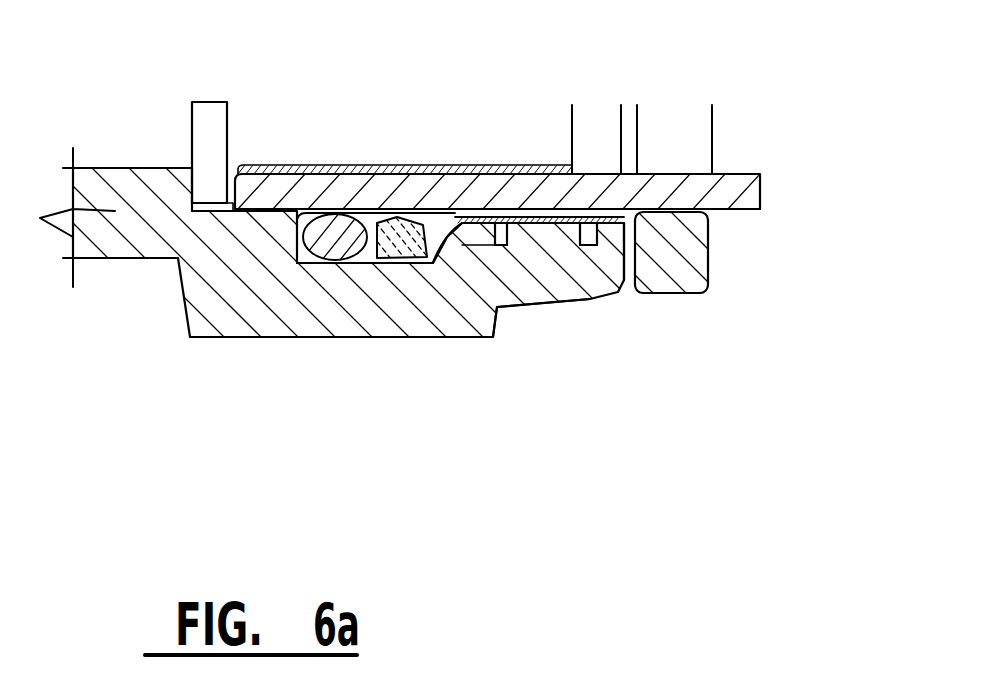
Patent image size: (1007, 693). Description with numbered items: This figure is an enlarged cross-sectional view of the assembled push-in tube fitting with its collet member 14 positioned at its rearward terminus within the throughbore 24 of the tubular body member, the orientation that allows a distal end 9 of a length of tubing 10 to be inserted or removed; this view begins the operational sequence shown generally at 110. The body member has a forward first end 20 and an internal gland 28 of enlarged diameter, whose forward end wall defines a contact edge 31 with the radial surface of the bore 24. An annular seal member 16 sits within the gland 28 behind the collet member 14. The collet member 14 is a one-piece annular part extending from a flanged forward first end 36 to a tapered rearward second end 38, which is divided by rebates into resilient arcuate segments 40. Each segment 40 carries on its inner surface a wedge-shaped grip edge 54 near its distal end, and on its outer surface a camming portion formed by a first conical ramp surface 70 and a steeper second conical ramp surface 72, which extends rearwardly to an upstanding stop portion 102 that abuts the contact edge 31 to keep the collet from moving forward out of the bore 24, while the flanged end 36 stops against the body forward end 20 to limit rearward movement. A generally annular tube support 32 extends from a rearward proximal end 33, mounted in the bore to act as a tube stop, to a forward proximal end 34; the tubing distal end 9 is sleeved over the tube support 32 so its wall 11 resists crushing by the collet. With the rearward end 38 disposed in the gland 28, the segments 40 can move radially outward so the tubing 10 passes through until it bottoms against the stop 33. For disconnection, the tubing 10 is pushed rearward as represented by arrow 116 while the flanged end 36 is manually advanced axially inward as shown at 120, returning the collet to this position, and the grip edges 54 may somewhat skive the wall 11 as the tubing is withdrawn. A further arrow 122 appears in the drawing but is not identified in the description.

The distal end 9 is at (282, 176).
The tubing 10 is at (723, 174).
The wall 11 is at (676, 192).
The collet member 14 is at (680, 294).
The seal member 16 is at (318, 240).
The body member first end 20 is at (634, 293).
The throughbore 24 is at (608, 240).
The internal gland 28 is at (446, 268).
The contact edge 31 is at (448, 268).
The tube support 32 is at (398, 222).
The rearward proximal end 33 is at (227, 122).
The forward proximal end 34 is at (572, 135).
The flanged forward first end 36 is at (710, 262).
The tapered rearward second end 38 is at (362, 225).
The arcuate segments 40 is at (448, 217).
The grip edge 54 is at (415, 171).
The first conical ramp surface 70 is at (498, 307).
The second conical ramp surface 72 is at (428, 265).
The stop portion 102 is at (421, 265).
The operational sequence 110 is at (760, 407).
The arrow 116 is at (558, 405).
The axially inward advancement 120 is at (732, 223).
The direction of force 122 is at (379, 302).